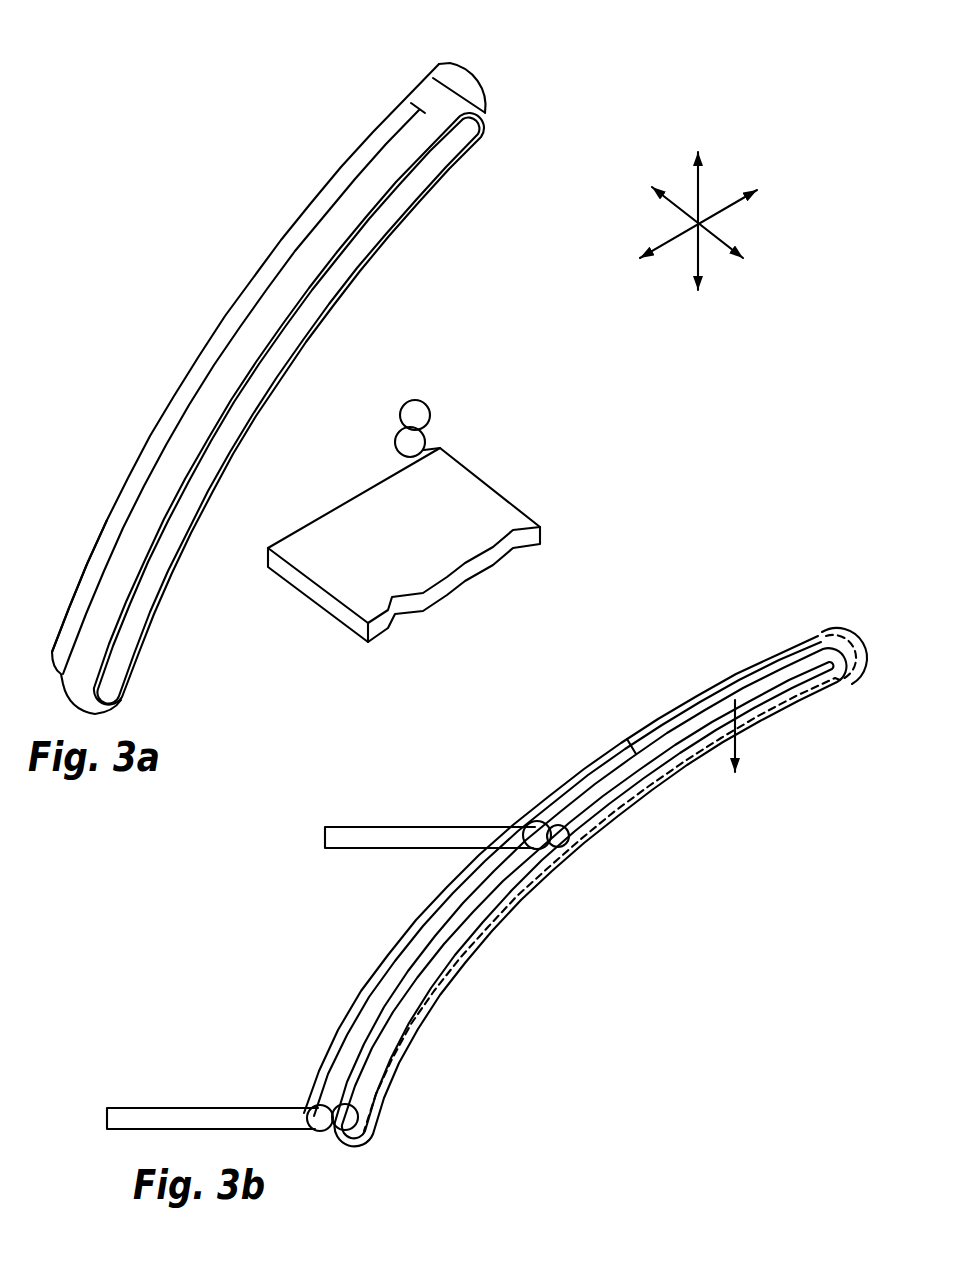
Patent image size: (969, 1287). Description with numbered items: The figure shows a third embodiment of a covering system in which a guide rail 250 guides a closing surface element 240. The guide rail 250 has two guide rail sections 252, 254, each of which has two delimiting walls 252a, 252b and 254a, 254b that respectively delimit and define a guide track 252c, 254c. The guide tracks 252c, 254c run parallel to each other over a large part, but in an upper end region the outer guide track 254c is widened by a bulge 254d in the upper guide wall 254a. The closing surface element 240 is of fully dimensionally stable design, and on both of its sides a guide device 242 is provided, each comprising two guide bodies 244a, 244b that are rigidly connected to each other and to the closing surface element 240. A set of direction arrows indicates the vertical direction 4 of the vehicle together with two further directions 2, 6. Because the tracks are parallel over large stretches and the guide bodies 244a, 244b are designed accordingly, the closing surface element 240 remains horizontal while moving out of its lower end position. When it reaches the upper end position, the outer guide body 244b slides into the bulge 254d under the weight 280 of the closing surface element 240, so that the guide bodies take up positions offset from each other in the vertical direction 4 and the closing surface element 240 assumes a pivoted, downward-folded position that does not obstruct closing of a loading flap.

In FIG. 3A, the coordinate axes 2 is at (707, 230).
In FIG. 3A, the vertical direction 4 is at (702, 183).
In FIG. 3A, the diagonal axis direction 6 is at (728, 203).
In FIG. 3A, the closing surface element 240 is at (495, 598).
In FIG. 3B, the closing surface element 240 is at (422, 820).
In FIG. 3A, the guide device 242 is at (445, 427).
In FIG. 3A, the guide body 244a is at (400, 427).
In FIG. 3B, the guide body 244a is at (547, 850).
In FIG. 3A, the outer guide body 244b is at (395, 428).
In FIG. 3B, the outer guide body 244b is at (553, 823).
In FIG. 3A, the guide rail 250 is at (160, 273).
In FIG. 3A, the guide rail section 252 is at (500, 100).
In FIG. 3A, the delimiting wall 252a is at (387, 203).
In FIG. 3B, the delimiting wall 252a is at (420, 930).
In FIG. 3A, the delimiting wall 252b is at (387, 250).
In FIG. 3B, the delimiting wall 252b is at (403, 948).
In FIG. 3A, the guide track 252c is at (320, 305).
In FIG. 3B, the guide track 252c is at (417, 987).
In FIG. 3A, the guide rail section 254 is at (472, 72).
In FIG. 3A, the upper guide wall 254a is at (72, 625).
In FIG. 3B, the upper guide wall 254a is at (353, 1065).
In FIG. 3B, the delimiting wall 254b is at (383, 1087).
In FIG. 3B, the outer guide track 254c is at (367, 1098).
In FIG. 3A, the bulge 254d is at (435, 88).
In FIG. 3B, the bulge 254d is at (833, 630).
In FIG. 3B, the weight 280 is at (738, 752).